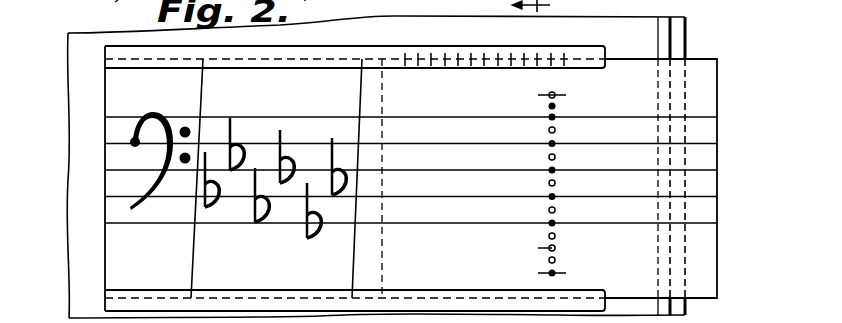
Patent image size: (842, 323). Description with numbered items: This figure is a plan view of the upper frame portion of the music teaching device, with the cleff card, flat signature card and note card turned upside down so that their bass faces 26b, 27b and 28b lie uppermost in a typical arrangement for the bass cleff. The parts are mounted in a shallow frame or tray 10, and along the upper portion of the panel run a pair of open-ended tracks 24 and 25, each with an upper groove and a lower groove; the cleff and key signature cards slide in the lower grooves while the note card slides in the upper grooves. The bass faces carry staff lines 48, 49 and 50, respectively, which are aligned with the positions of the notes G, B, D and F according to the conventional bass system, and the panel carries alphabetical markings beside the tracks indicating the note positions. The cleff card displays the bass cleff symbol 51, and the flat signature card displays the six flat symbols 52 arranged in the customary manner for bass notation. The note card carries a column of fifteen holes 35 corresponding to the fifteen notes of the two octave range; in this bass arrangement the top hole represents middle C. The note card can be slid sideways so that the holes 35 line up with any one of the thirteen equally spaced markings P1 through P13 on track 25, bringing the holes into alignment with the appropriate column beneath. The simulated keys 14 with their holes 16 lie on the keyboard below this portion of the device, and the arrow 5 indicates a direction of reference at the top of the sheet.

The direction arrow 5 is at (516, 8).
The frame or tray 10 is at (681, 33).
The keys 14 is at (107, 6).
The hole 16 is at (306, 0).
The track 24 is at (580, 292).
The track 25 is at (590, 55).
The bass face of cleff card 26b is at (117, 82).
The bass face of key signature card 27b is at (290, 85).
The bass face of note card 28b is at (695, 75).
The holes 35 is at (556, 117).
The staff lines 48 is at (116, 145).
The staff lines 49 is at (308, 142).
The staff lines 50 is at (462, 160).
The bass cleff symbol 51 is at (155, 115).
The flat symbols 52 is at (277, 158).